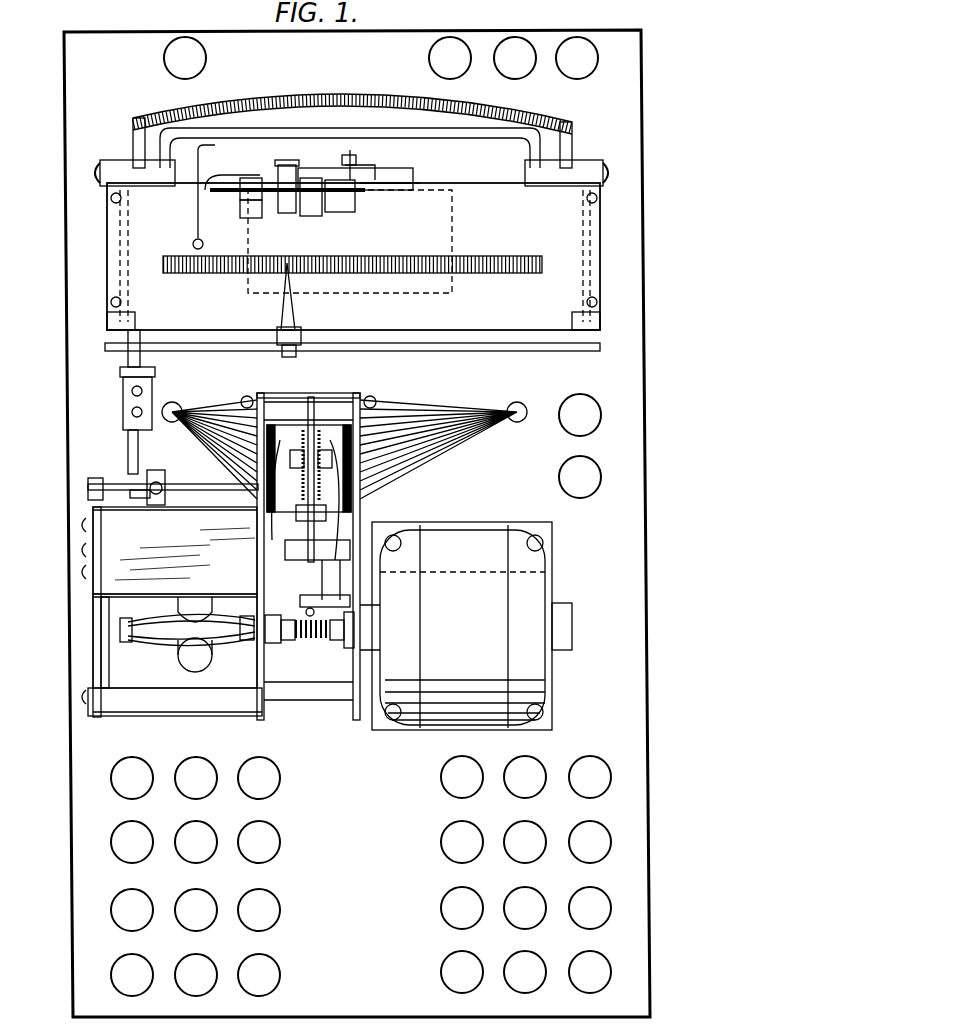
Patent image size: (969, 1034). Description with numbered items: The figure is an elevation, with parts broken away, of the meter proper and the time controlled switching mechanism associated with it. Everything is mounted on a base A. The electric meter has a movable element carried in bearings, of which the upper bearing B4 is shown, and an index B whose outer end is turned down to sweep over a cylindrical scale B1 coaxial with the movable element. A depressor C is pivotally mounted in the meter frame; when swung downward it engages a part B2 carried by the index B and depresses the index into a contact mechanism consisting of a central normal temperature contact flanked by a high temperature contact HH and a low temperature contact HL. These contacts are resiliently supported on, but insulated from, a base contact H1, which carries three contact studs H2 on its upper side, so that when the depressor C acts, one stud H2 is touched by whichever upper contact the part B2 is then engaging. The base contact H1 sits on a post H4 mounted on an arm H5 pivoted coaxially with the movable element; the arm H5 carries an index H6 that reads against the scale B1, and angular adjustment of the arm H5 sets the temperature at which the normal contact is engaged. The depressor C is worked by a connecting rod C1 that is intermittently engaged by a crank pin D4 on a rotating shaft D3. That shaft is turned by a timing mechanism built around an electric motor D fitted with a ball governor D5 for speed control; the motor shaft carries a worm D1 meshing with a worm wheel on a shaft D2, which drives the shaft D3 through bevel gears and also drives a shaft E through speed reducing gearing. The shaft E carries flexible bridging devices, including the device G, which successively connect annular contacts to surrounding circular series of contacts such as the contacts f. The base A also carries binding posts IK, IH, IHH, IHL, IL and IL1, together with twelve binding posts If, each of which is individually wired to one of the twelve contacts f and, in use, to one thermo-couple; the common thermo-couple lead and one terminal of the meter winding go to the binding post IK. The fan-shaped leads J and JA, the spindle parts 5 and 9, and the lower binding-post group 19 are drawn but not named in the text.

The binding post IK is at (155, 58).
The binding post IHL is at (428, 60).
The binding post IH is at (512, 70).
The binding post IHH is at (582, 72).
The depressor C is at (300, 108).
The index part B2 is at (238, 152).
The index B is at (215, 210).
The low temperature contact HL is at (215, 222).
The contact studs H2 is at (262, 215).
The high temperature contact HH is at (318, 215).
The base contact H1 is at (358, 205).
The upper bearing B4 is at (358, 165).
The cylindrical scale B1 is at (395, 262).
The post H4 is at (272, 305).
The index H6 is at (298, 305).
The arm H5 is at (300, 350).
The base A is at (80, 318).
The connecting rod C1 is at (125, 402).
The crank pin D4 is at (138, 490).
The wire fan J is at (195, 450).
The wire fan JA is at (445, 448).
The shaft E is at (272, 412).
The spindle 5 is at (300, 400).
The bridging device G is at (340, 392).
The contacts f is at (274, 498).
The link 9 is at (331, 578).
The shaft D2 is at (305, 582).
The worm D1 is at (320, 640).
The rotating shaft D3 is at (185, 495).
The ball governor D5 is at (160, 640).
The electric motor D is at (466, 626).
The binding post IL is at (585, 410).
The binding post IL1 is at (575, 490).
The binding posts If is at (122, 793).
The terminal group 19 is at (515, 965).